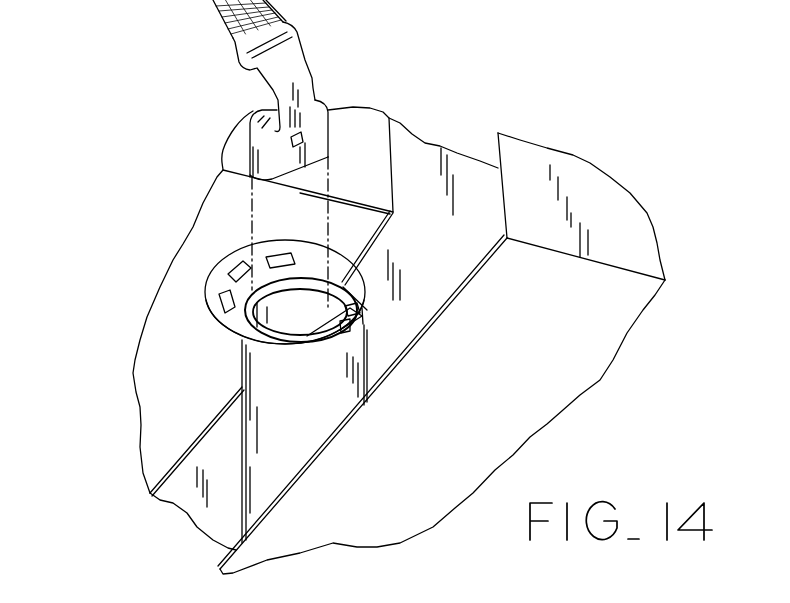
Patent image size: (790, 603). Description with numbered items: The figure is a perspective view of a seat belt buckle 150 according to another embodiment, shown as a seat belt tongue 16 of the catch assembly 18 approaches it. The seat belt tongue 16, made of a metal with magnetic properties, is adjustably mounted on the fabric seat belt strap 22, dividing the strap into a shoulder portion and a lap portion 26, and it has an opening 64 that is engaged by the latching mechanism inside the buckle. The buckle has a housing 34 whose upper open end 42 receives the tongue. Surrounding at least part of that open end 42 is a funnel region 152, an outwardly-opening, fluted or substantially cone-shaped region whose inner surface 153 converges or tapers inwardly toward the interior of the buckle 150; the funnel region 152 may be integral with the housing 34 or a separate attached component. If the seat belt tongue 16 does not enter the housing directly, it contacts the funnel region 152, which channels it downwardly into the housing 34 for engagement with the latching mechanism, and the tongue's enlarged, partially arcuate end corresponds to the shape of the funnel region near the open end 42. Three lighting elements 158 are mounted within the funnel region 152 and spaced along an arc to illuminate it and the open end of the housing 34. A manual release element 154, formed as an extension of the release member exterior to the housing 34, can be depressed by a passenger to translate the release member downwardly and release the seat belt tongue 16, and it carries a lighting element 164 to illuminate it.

The seat belt tongue 16 is at (318, 100).
The catch assembly 18 is at (224, 65).
The seat belt strap 22 is at (222, 15).
The lap portion 26 is at (170, 388).
The housing 34 is at (283, 449).
The open end 42 is at (312, 342).
The opening 64 is at (303, 138).
The seat belt buckle 150 is at (360, 446).
The funnel region 152 is at (210, 256).
The inner surface 153 is at (244, 255).
The manual release element 154 is at (366, 307).
The lighting elements 158 is at (272, 256).
The lighting element 164 is at (380, 303).